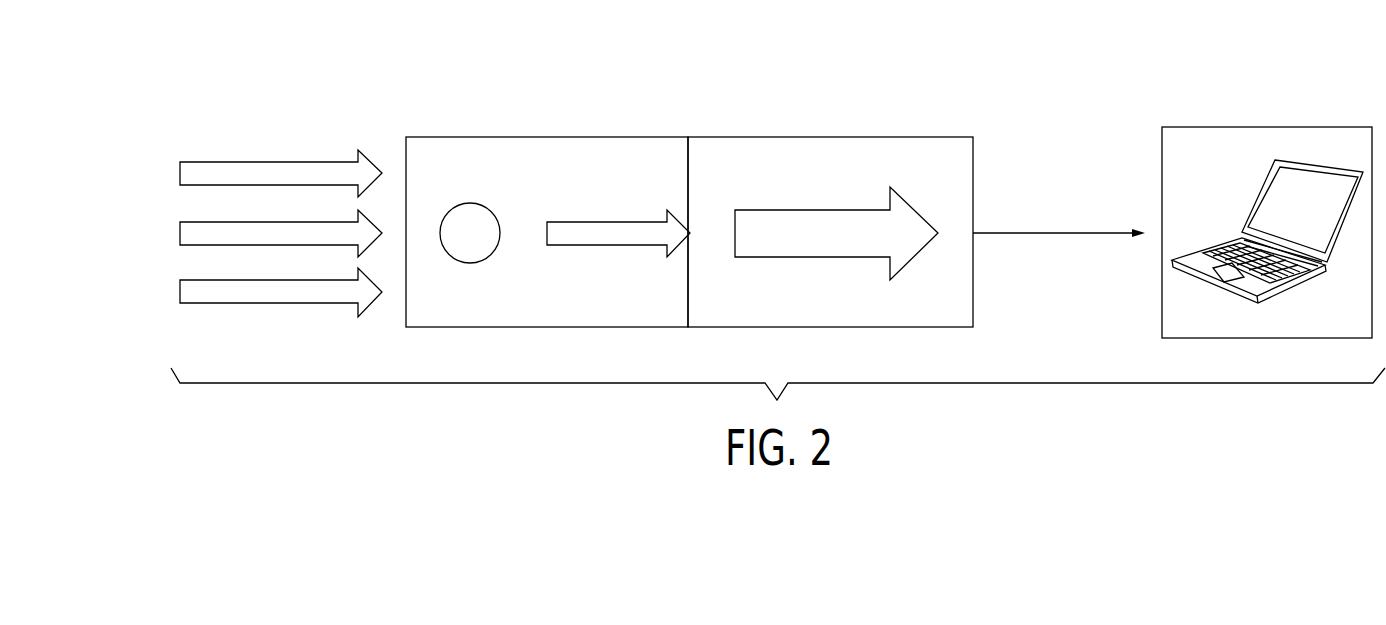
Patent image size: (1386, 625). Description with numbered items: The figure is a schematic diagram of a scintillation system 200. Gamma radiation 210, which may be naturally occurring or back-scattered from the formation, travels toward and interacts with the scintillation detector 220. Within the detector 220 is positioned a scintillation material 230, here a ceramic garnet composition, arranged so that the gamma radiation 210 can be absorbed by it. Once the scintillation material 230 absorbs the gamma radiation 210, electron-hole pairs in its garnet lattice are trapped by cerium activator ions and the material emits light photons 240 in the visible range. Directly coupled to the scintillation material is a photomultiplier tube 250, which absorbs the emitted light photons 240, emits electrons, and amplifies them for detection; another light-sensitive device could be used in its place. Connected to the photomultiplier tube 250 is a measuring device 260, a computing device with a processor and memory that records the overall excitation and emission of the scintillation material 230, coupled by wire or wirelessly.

The scintillation system 200 is at (186, 80).
The gamma radiation 210 is at (180, 262).
The scintillation detector 220 is at (552, 137).
The scintillation material 230 is at (472, 232).
The light photons 240 is at (640, 233).
The photomultiplier tube 250 is at (830, 137).
The measuring device 260 is at (1259, 127).